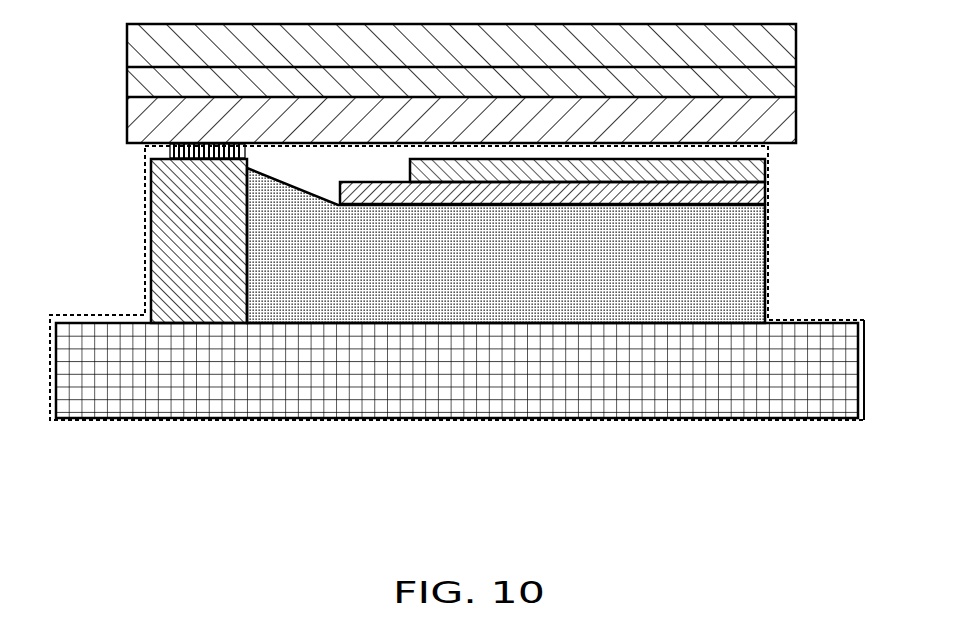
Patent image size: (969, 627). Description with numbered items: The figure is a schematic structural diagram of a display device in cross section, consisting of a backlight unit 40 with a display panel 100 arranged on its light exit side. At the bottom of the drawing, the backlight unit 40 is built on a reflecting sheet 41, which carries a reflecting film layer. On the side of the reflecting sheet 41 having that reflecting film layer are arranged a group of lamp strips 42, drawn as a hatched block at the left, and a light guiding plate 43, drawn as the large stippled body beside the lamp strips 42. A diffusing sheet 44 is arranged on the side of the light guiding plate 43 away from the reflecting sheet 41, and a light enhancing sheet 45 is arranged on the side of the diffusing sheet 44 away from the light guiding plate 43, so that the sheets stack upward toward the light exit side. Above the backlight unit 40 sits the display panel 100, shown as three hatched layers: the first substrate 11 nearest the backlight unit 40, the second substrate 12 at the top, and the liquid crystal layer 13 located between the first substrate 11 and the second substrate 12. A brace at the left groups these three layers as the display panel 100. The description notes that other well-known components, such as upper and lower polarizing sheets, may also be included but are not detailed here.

The display panel 100 is at (468, 80).
The first substrate 11 is at (796, 128).
The second substrate 12 is at (796, 47).
The liquid crystal layer 13 is at (796, 92).
The backlight unit 40 is at (53, 363).
The reflecting sheet 41 is at (860, 333).
The group of lamp strips 42 is at (167, 228).
The light guiding plate 43 is at (765, 245).
The diffusing sheet 44 is at (765, 196).
The light enhancing sheet 45 is at (765, 172).